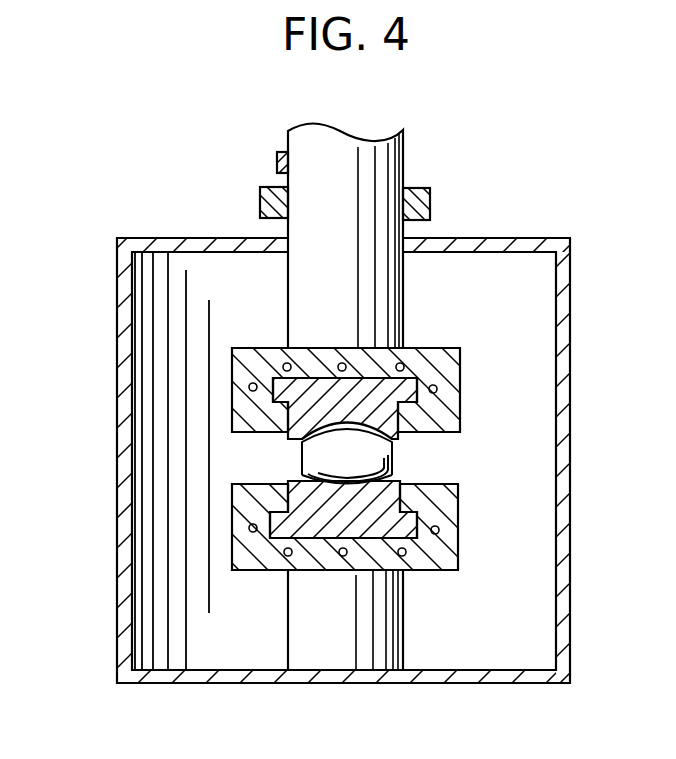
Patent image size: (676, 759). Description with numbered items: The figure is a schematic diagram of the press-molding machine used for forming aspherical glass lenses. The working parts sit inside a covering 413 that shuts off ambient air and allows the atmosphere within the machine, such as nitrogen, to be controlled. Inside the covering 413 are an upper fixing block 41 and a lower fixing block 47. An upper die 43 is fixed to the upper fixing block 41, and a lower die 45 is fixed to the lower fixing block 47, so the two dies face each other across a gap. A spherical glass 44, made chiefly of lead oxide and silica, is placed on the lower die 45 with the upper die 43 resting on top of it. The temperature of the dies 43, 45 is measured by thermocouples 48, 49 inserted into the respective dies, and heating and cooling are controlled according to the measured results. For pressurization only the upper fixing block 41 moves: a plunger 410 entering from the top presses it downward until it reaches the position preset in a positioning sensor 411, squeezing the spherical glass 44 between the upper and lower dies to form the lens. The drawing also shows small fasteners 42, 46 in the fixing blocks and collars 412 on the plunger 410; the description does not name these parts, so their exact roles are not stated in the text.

The upper fixing block 41 is at (440, 362).
The screw 42 is at (437, 387).
The upper die 43 is at (392, 401).
The spherical glass 44 is at (370, 449).
The lower die 45 is at (387, 498).
The screw 46 is at (439, 531).
The lower fixing block 47 is at (445, 560).
The thermocouple 48 is at (287, 412).
The thermocouple 49 is at (300, 499).
The plunger 410 is at (370, 153).
The positioning sensor 411 is at (279, 153).
The flange 412 is at (427, 195).
The covering 413 is at (447, 684).